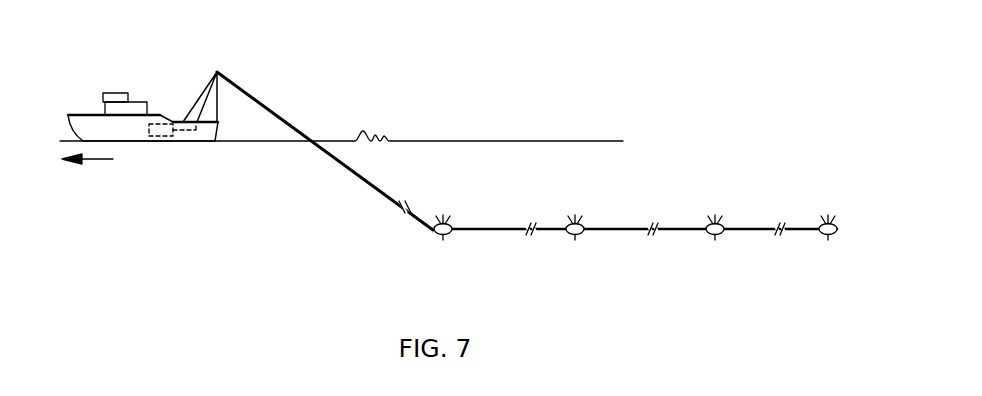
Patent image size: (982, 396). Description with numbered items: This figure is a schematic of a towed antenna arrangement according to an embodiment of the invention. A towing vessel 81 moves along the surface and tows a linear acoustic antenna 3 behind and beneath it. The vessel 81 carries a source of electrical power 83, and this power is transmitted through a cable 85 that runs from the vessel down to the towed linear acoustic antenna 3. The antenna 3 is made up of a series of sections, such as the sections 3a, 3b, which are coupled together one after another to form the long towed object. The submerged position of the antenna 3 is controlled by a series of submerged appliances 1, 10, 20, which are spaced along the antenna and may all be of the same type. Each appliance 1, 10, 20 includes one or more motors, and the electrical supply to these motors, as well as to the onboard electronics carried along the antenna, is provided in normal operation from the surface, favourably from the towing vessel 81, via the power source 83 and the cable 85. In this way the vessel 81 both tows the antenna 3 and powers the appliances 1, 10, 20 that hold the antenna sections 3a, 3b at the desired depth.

The towing vessel 81 is at (87, 113).
The cable 85 is at (207, 98).
The source of electrical power 83 is at (155, 137).
The appliance 1 is at (452, 220).
The towed linear acoustic antenna 3 is at (527, 195).
The antenna section 3a is at (433, 230).
The antenna section 3b is at (487, 228).
The submerged appliance 10 is at (588, 220).
The submerged appliance 20 is at (727, 220).